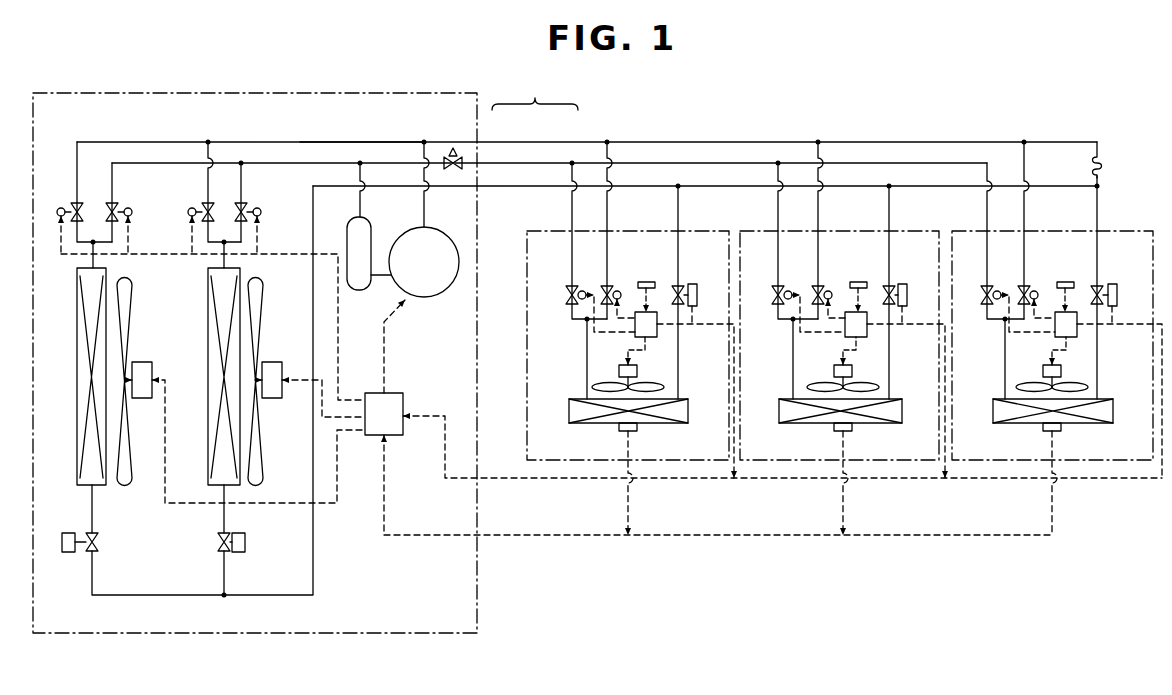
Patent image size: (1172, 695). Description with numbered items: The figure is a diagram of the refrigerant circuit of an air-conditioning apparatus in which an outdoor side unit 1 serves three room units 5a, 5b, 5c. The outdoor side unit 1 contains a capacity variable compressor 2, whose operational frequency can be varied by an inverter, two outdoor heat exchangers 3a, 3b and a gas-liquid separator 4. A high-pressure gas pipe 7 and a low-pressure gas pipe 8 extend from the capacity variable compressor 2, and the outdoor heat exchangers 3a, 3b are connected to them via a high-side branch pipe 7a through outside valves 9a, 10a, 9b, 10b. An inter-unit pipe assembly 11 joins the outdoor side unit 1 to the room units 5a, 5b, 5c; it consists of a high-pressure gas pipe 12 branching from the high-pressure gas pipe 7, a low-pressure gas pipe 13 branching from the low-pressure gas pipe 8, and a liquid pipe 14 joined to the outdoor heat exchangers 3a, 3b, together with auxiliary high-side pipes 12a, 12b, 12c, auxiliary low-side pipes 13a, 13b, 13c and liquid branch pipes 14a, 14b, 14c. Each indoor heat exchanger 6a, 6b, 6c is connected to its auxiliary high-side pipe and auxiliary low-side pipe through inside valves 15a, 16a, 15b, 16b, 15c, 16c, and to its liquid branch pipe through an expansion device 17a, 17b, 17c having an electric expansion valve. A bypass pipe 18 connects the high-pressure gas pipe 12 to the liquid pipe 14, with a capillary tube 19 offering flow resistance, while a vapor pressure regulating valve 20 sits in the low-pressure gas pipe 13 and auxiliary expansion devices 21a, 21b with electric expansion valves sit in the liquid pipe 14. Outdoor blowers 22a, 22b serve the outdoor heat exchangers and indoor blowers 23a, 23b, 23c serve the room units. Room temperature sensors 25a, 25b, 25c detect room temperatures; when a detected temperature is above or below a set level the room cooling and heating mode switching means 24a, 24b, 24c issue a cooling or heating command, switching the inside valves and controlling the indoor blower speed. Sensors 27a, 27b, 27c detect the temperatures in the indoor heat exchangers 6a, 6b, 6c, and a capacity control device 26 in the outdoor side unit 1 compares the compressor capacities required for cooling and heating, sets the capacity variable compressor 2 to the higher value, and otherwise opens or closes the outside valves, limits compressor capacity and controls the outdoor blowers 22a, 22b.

The outdoor side unit 1 is at (478, 610).
The capacity variable compressor 2 is at (424, 297).
The outdoor heat exchanger 3a is at (75, 442).
The outdoor heat exchanger 3b is at (208, 442).
The gas-liquid separator 4 is at (359, 291).
The room unit 5a is at (699, 231).
The room unit 5b is at (910, 231).
The room unit 5c is at (1122, 231).
The indoor heat exchanger 6a is at (680, 423).
The indoor heat exchanger 6b is at (894, 423).
The indoor heat exchanger 6c is at (1105, 423).
The high-pressure gas pipe 7 is at (426, 205).
The high-side branch pipe 7a is at (314, 142).
The low-pressure gas pipe 8 is at (362, 205).
The outside valve 9a is at (61, 208).
The outside valve 9b is at (192, 208).
The outside valve 10a is at (128, 208).
The outside valve 10b is at (257, 208).
The inter-unit pipe assembly 11 is at (535, 93).
The high-pressure gas pipe 12 is at (505, 142).
The low-pressure gas pipe 13 is at (528, 163).
The liquid pipe 14 is at (553, 186).
The auxiliary high-side pipe 12a is at (610, 158).
The auxiliary high-side pipe 12b is at (821, 158).
The auxiliary high-side pipe 12c is at (1027, 160).
The auxiliary low-side pipe 13a is at (571, 210).
The auxiliary low-side pipe 13b is at (777, 210).
The auxiliary low-side pipe 13c is at (986, 210).
The liquid branch pipe 14a is at (678, 205).
The liquid branch pipe 14b is at (889, 205).
The liquid branch pipe 14c is at (1097, 205).
The inside valve 15a is at (610, 287).
The inside valve 15b is at (821, 287).
The inside valve 15c is at (1027, 287).
The inside valve 16a is at (570, 303).
The inside valve 16b is at (776, 303).
The inside valve 16c is at (985, 303).
The expansion device 17a is at (693, 284).
The expansion device 17b is at (903, 284).
The expansion device 17c is at (1113, 284).
The bypass pipe 18 is at (1099, 184).
The capillary tube 19 is at (1101, 160).
The vapor pressure regulating valve 20 is at (451, 152).
The auxiliary expansion device 21a is at (97, 547).
The auxiliary expansion device 21b is at (247, 547).
The outdoor blower 22a is at (145, 362).
The outdoor blower 22b is at (275, 362).
The indoor blower 23a is at (605, 385).
The indoor blower 23b is at (820, 385).
The indoor blower 23c is at (1030, 385).
The room cooling and heating mode switching means 24a is at (657, 333).
The room cooling and heating mode switching means 24b is at (867, 333).
The room cooling and heating mode switching means 24c is at (1077, 333).
The room temperature sensor 25a is at (647, 282).
The room temperature sensor 25b is at (859, 282).
The room temperature sensor 25c is at (1066, 282).
The capacity control device 26 is at (397, 437).
The sensor 27a is at (619, 431).
The sensor 27b is at (834, 431).
The sensor 27c is at (1043, 431).